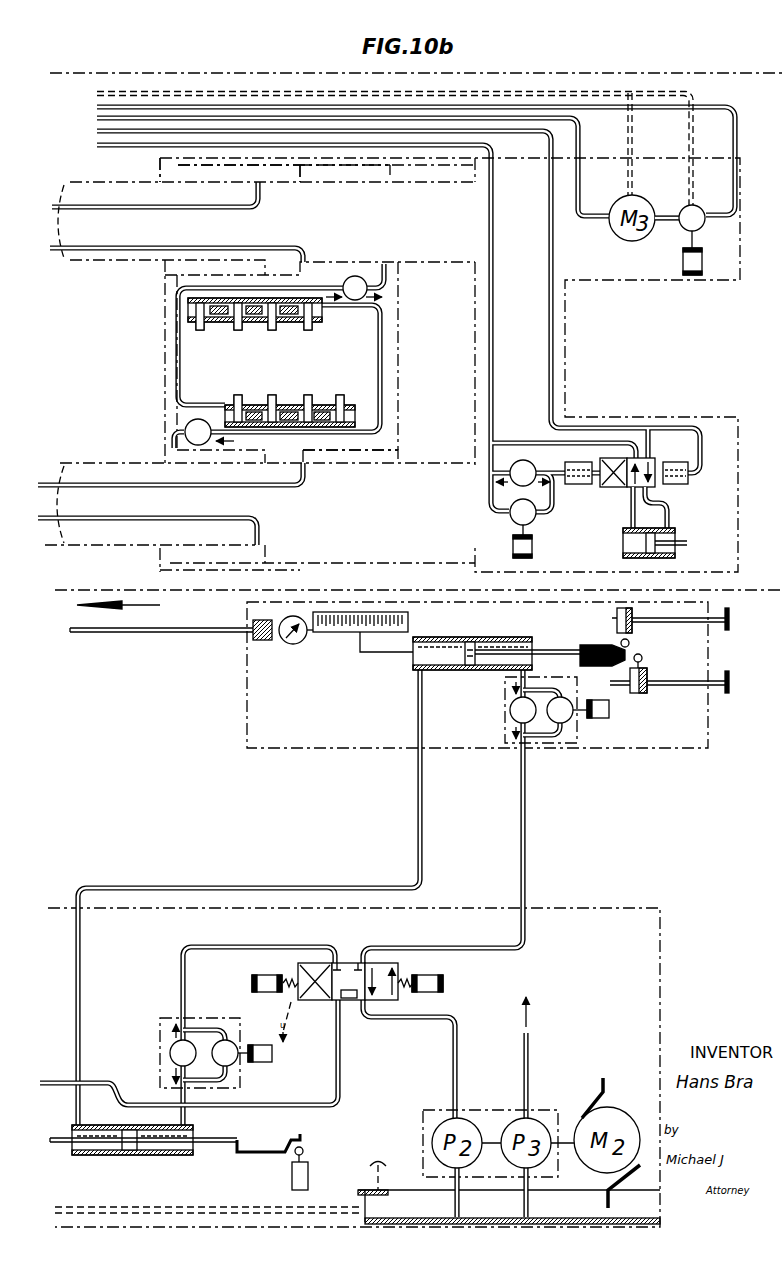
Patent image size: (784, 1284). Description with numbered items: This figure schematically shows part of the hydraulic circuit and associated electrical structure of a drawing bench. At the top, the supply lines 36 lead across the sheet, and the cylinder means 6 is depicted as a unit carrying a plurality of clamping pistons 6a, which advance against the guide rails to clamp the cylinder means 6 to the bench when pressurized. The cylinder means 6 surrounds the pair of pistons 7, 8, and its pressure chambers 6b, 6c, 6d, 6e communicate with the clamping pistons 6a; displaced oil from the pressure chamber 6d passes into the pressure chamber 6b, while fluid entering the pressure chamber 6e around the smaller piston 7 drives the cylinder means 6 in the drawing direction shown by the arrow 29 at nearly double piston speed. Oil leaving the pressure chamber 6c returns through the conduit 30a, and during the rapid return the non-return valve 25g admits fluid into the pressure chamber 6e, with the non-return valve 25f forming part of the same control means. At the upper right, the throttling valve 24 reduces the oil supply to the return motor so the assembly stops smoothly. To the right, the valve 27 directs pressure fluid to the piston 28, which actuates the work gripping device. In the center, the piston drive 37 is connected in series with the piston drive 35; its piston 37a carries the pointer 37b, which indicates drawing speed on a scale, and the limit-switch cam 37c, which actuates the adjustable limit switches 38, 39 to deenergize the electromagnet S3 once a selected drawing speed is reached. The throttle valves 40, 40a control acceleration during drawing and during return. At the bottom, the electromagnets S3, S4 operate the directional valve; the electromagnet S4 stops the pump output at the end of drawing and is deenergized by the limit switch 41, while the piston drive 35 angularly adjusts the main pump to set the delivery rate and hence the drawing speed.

The supply lines 36 is at (148, 106).
The piston 7 is at (80, 183).
The pressure chamber 6e is at (160, 172).
The fluid pressure chamber 6c is at (392, 170).
The throttling valve 24 is at (685, 208).
The conduit 30a is at (300, 250).
The non-return valve 25g is at (358, 276).
The clamping pistons 6a is at (238, 330).
The cylinder means 6 is at (401, 364).
The non-return valve 25f is at (185, 431).
The piston 8 is at (64, 464).
The fluid pressure chamber 6b is at (399, 462).
The pressure chamber 6d is at (176, 560).
The valve 27 is at (612, 489).
The piston 28 is at (628, 547).
The arrow 29 is at (160, 606).
The pointer 37b is at (362, 643).
The piston drive 37 is at (502, 637).
The piston 37a is at (468, 672).
The limit-switch cam 37c is at (588, 646).
The limit switch 39 is at (634, 630).
The limit switch 38 is at (640, 694).
The throttle valve 40a is at (546, 726).
The electromagnet S3 is at (267, 992).
The electromagnet S4 is at (430, 976).
The throttle valve 40 is at (210, 1072).
The piston drive 35 is at (175, 1160).
The limit switch 41 is at (309, 1176).